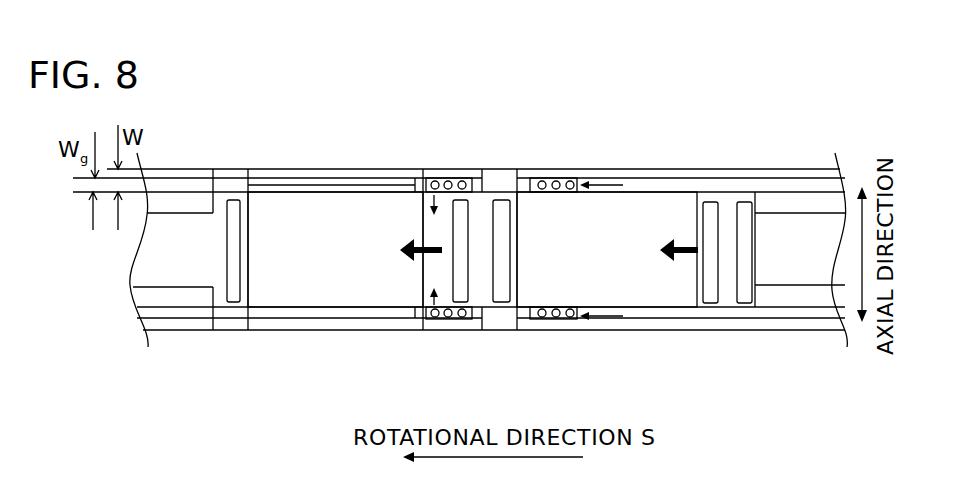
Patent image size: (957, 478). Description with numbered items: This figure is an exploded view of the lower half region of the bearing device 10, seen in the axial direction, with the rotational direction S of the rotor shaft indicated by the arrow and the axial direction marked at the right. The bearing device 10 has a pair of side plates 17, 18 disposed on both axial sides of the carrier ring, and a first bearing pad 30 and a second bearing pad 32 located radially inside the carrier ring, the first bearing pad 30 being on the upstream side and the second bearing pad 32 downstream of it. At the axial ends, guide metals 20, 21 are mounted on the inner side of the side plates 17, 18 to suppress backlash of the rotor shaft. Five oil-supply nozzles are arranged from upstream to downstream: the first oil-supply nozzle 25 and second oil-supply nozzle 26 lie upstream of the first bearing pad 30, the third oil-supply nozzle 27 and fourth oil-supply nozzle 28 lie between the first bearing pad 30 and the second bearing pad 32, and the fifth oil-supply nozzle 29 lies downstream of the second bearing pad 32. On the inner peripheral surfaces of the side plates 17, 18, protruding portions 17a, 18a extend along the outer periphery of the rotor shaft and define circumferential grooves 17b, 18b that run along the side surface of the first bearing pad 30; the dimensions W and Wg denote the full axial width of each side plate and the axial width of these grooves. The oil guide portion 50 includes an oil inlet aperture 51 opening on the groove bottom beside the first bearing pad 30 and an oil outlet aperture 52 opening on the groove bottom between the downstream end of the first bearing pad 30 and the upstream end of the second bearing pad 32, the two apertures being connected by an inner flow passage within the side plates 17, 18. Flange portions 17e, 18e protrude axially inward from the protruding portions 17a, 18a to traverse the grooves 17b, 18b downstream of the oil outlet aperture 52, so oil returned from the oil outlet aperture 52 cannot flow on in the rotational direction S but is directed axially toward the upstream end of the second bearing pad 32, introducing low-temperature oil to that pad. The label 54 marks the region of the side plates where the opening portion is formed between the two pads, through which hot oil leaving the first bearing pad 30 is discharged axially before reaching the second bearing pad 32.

The bearing device 10 is at (713, 98).
The side plate 17 is at (775, 334).
The protruding portion 17a is at (710, 332).
The groove 17b is at (748, 332).
The flange portion 17e is at (420, 332).
The side plate 18 is at (773, 168).
The protruding portion 18a is at (325, 178).
The groove 18b is at (290, 183).
The flange portion 18e is at (422, 180).
The guide metal 20 is at (172, 300).
The guide metal 21 is at (195, 200).
The first oil-supply nozzle 25 is at (757, 230).
The second oil-supply nozzle 26 is at (700, 285).
The third oil-supply nozzle 27 is at (507, 227).
The fourth oil-supply nozzle 28 is at (470, 290).
The fifth oil-supply nozzle 29 is at (224, 210).
The first bearing pad 30 is at (640, 205).
The second bearing pad 32 is at (362, 203).
The oil guide portion 50 is at (505, 140).
The oil inlet aperture 51 is at (575, 180).
The oil outlet aperture 52 is at (447, 178).
The groove bottom portion 54 is at (490, 175).